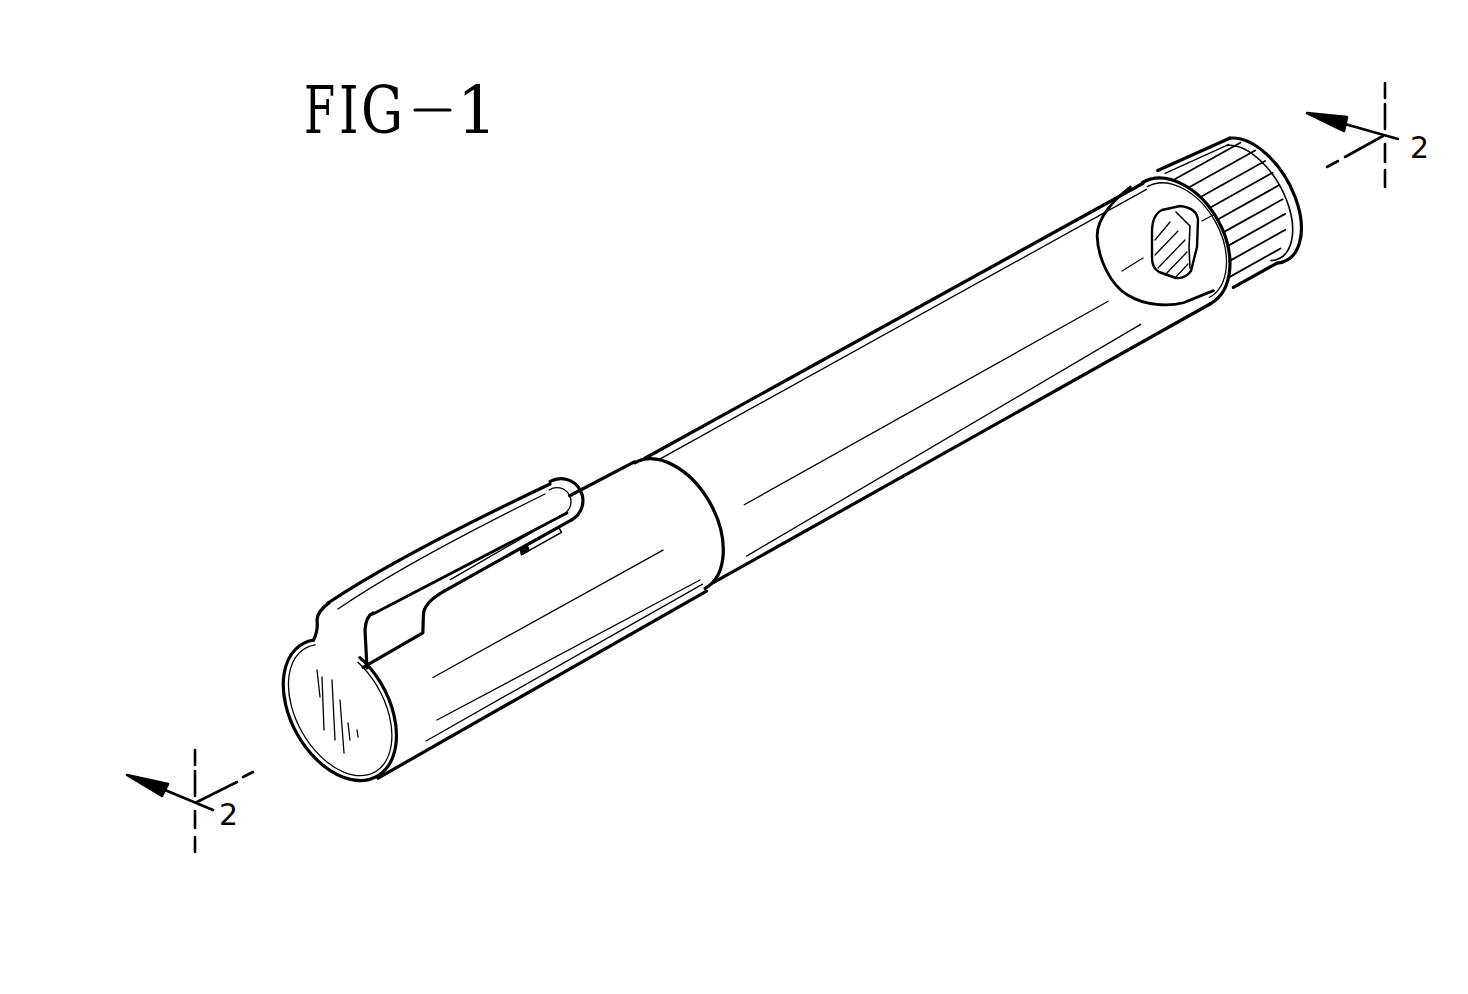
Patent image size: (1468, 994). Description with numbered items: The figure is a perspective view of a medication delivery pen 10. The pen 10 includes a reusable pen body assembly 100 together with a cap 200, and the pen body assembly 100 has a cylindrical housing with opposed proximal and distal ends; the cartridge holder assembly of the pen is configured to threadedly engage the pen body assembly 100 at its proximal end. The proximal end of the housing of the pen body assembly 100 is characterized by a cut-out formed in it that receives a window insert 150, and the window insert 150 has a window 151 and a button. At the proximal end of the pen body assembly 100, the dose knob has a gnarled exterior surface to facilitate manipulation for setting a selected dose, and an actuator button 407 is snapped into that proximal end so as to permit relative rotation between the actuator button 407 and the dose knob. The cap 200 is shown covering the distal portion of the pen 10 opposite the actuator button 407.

The medication delivery pen 10 is at (1010, 515).
The reusable pen body assembly 100 is at (810, 347).
The window insert 150 is at (1157, 293).
The window 151 is at (1162, 208).
The cap 200 is at (580, 610).
The actuator button 407 is at (1287, 225).